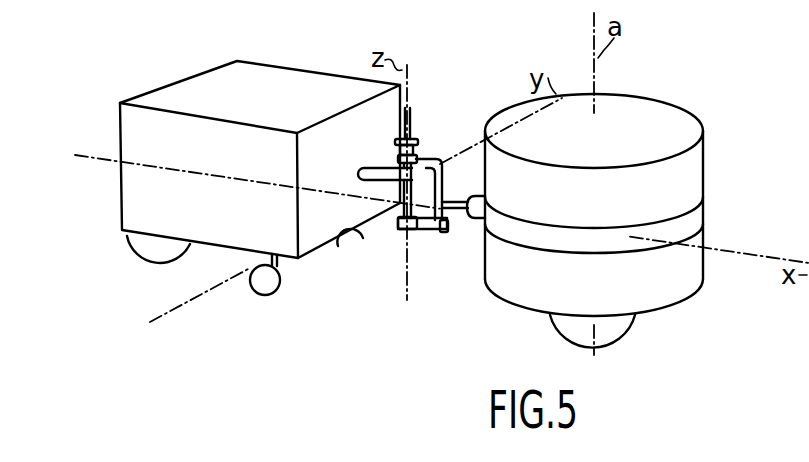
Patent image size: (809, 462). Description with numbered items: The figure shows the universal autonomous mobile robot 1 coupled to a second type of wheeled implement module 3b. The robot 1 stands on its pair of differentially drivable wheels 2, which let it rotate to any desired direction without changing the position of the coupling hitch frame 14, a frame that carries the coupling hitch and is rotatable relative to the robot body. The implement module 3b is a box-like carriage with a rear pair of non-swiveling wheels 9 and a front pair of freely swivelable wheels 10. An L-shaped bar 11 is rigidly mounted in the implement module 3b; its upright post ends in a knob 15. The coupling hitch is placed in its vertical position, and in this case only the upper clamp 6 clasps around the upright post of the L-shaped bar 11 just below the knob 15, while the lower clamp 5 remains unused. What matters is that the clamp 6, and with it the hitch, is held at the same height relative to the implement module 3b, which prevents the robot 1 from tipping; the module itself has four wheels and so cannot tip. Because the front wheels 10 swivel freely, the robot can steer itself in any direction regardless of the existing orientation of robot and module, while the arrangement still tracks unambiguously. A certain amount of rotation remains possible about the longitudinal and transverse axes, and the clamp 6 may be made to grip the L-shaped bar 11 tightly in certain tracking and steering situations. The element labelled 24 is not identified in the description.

The autonomous mobile robot 1 is at (584, 210).
The differentially drivable wheels 2 is at (570, 333).
The implement module 3b is at (201, 155).
The coupling clamp 5 is at (399, 230).
The coupling clamp 6 is at (416, 158).
The non-swiveling wheels 9 is at (144, 243).
The freely swivelable wheels 10 is at (263, 281).
The L-shaped bar 11 is at (370, 168).
The coupling hitch frame 14 is at (701, 207).
The knob 15 is at (408, 138).
The coupling lug 24 is at (440, 229).